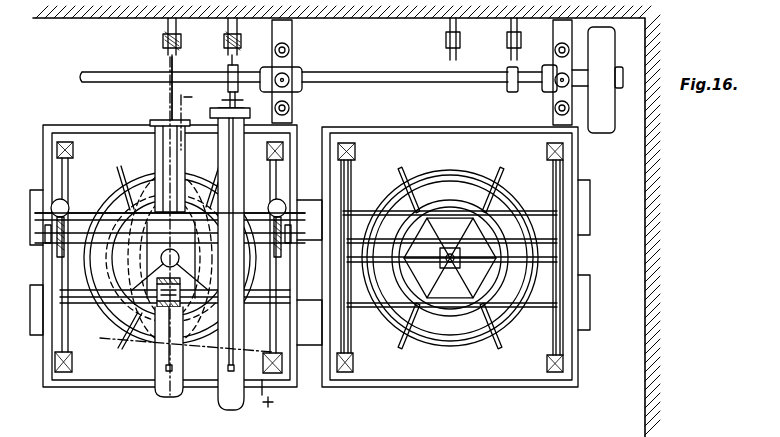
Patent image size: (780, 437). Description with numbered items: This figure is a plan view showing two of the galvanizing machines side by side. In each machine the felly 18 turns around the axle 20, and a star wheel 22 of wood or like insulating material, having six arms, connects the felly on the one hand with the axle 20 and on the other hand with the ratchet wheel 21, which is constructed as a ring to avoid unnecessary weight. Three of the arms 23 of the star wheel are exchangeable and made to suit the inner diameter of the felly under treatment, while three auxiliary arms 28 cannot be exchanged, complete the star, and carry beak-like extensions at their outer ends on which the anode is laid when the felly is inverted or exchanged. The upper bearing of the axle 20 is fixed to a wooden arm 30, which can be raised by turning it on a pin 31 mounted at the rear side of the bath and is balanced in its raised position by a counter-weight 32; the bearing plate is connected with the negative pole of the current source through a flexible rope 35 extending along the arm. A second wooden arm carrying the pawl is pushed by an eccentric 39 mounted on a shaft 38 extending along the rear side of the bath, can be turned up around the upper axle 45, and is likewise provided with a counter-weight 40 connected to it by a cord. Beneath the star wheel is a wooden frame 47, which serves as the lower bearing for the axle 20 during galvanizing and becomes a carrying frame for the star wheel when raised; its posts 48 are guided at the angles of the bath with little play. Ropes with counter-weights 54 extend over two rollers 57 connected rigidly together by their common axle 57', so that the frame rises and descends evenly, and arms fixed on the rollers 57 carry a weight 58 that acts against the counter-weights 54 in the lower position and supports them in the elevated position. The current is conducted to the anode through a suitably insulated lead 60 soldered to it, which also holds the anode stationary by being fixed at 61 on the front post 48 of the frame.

The felly 18 is at (436, 340).
The axle 20 is at (162, 259).
The ratchet wheel 21 is at (112, 283).
The star wheel 22 is at (502, 278).
The arms 23 is at (502, 178).
The auxiliary arms 28 is at (116, 198).
The wooden arm 30 is at (172, 394).
The pin 31 is at (165, 118).
The counter-weight 32 is at (167, 37).
The flexible rope 35 is at (176, 155).
The shaft 38 is at (396, 76).
The eccentric 39 is at (239, 70).
The counter-weight 40 is at (227, 33).
The upper axle 45 is at (238, 110).
The wooden frame 47 is at (118, 294).
The posts 48 is at (65, 144).
The counter-weights 54 is at (64, 203).
The rollers 57 is at (168, 226).
The common axle 57' is at (170, 180).
The weight 58 is at (166, 308).
The lead 60 is at (208, 345).
The fixing point 61 is at (275, 350).